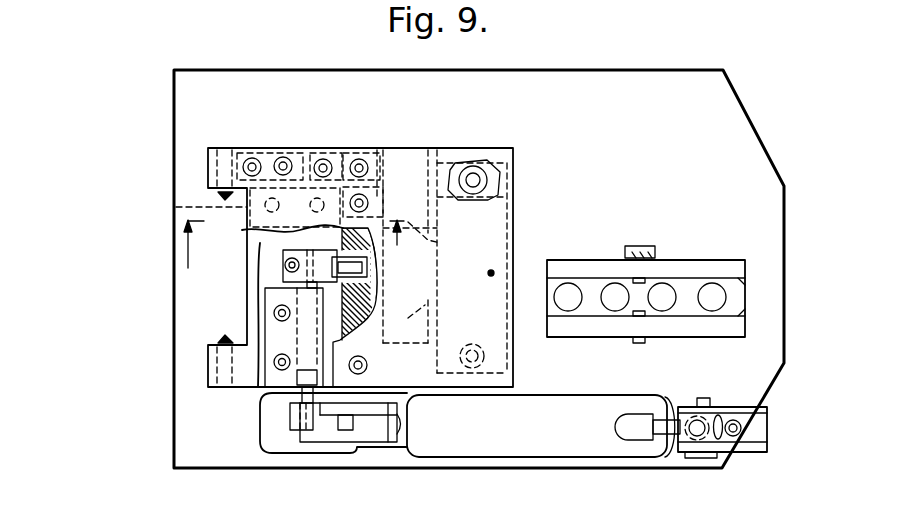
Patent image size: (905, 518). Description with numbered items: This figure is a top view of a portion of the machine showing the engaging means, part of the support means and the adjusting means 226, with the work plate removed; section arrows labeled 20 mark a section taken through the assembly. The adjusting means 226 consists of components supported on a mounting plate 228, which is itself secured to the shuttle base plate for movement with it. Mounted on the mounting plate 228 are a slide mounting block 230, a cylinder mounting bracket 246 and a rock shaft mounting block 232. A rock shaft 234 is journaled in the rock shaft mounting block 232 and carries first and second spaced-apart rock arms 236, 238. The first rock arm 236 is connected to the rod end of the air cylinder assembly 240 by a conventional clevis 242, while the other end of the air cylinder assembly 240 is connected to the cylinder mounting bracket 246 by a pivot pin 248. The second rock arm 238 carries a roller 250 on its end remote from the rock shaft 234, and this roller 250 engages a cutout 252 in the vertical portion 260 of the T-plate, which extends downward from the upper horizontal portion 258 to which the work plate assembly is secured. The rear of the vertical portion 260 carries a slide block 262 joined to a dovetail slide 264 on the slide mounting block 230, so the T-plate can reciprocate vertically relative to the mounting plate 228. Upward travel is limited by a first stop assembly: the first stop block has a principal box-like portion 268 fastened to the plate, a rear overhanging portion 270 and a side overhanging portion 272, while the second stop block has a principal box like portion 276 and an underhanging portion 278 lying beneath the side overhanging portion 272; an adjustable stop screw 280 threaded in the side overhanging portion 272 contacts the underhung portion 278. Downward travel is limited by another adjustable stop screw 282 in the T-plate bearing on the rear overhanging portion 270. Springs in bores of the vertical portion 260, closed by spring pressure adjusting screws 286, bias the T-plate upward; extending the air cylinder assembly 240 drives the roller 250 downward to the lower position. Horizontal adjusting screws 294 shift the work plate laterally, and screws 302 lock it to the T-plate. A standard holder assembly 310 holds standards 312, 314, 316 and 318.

The section line 20 is at (293, 258).
The adjusting means 226 is at (150, 443).
The mounting plate 228 is at (661, 137).
The slide mounting block 230 is at (503, 208).
The rock shaft mounting block 232 is at (273, 300).
The rock shaft 234 is at (303, 394).
The first rock arm 236 is at (292, 424).
The second rock arm 238 is at (259, 248).
The air cylinder assembly 240 is at (556, 470).
The clevis 242 is at (378, 437).
The cylinder mounting bracket 246 is at (752, 452).
The pivot pin 248 is at (700, 458).
The roller 250 is at (370, 279).
The cutout 252 is at (250, 229).
The upper horizontal portion 258 is at (441, 153).
The vertical portion 260 is at (373, 299).
The slide block 262 is at (428, 150).
The dovetail slide 264 is at (440, 248).
The principal box-like portion 268 is at (176, 208).
The rear overhanging portion 270 is at (378, 150).
The side overhanging portion 272 is at (310, 148).
The principal box like portion 276 is at (270, 150).
The rearwardly extending underhanging portion 278 is at (317, 150).
The adjustable stop screw 280 is at (327, 158).
The adjustable stop screw 282 is at (368, 208).
The spring pressure adjusting screws 286 is at (359, 158).
The horizontal adjusting screws 294 is at (216, 192).
The screws 302 is at (488, 270).
The standard holder assembly 310 is at (698, 240).
The standard 312 is at (568, 311).
The standard 314 is at (615, 311).
The standard 316 is at (662, 311).
The standard 318 is at (712, 311).